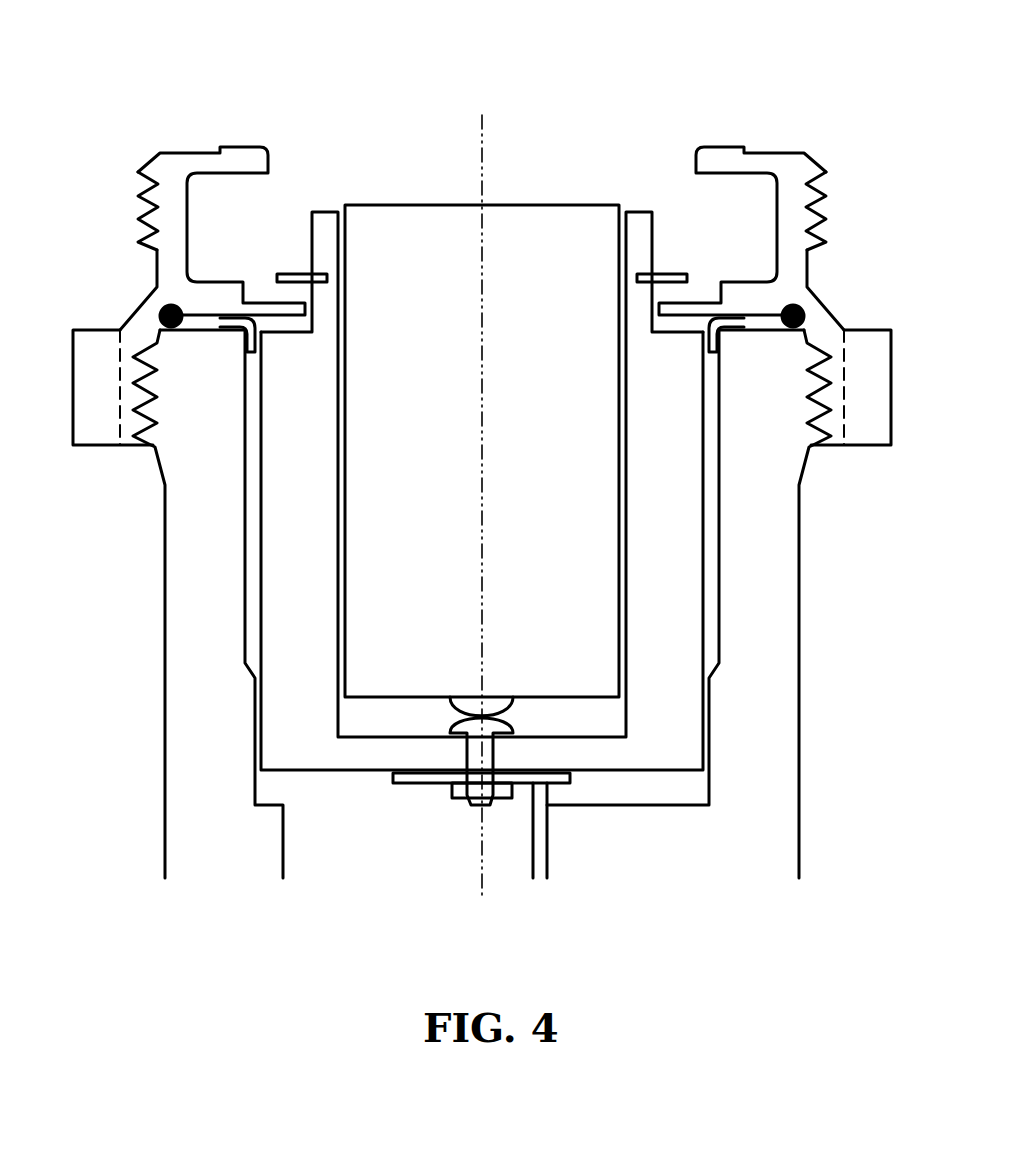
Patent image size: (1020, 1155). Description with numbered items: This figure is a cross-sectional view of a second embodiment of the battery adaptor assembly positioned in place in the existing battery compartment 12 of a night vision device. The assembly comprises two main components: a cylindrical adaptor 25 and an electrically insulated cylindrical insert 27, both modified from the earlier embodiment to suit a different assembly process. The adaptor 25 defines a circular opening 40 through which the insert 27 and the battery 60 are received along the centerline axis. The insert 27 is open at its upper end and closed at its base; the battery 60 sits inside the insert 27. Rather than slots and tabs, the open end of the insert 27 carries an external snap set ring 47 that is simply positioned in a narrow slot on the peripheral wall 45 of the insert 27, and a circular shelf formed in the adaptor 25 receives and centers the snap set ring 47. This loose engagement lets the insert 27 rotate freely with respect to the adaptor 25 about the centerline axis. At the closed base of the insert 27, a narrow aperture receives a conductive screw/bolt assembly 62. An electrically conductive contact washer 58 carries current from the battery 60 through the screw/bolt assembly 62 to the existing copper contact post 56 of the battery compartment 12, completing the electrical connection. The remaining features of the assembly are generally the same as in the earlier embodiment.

The circular opening 40 is at (463, 160).
The existing battery compartment 12 is at (757, 626).
The adaptor 25 is at (167, 268).
The insert 27 is at (280, 625).
The peripheral wall 45 is at (329, 203).
The external snap set ring 47 is at (668, 270).
The battery 60 is at (565, 551).
The conductive screw/bolt assembly 62 is at (477, 807).
The contact washer 58 is at (410, 785).
The contact post 56 is at (549, 850).